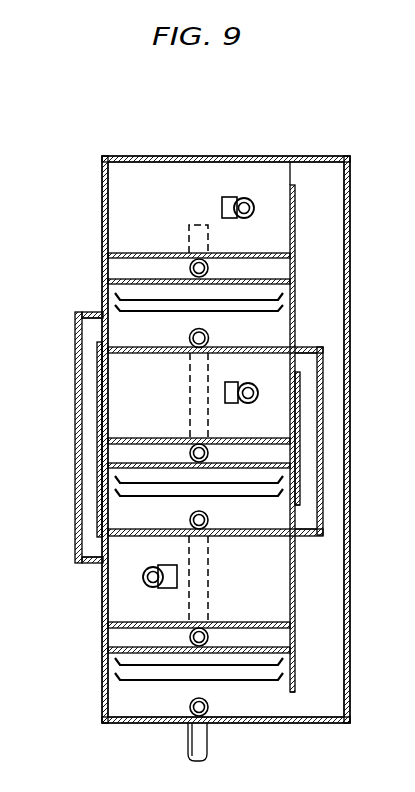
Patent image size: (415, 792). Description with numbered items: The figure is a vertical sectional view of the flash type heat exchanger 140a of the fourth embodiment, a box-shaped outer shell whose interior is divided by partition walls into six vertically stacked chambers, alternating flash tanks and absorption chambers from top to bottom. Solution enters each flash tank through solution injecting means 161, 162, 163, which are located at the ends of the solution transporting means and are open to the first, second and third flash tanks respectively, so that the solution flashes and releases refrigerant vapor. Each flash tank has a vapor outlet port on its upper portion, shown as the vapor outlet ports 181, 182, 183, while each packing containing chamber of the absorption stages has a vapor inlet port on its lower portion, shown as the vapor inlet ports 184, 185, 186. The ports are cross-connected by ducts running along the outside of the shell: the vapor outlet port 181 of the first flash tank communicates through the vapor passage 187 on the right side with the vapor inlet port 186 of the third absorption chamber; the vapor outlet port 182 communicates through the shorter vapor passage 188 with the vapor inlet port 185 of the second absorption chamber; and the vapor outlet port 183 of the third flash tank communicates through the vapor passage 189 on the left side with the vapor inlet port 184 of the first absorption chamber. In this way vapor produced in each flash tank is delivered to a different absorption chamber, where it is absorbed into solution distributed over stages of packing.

The flash type heat exchanger 140a is at (121, 148).
The solution injecting means 161 is at (236, 195).
The solution injecting means 162 is at (240, 366).
The solution injecting means 163 is at (172, 565).
The vapor outlet port 181 is at (292, 172).
The vapor outlet port 182 is at (300, 362).
The vapor outlet port 183 is at (103, 547).
The vapor inlet port 184 is at (78, 320).
The vapor inlet port 185 is at (293, 517).
The vapor inlet port 186 is at (293, 704).
The vapor passage 187 is at (328, 226).
The vapor passage 188 is at (344, 438).
The vapor passage 189 is at (63, 430).